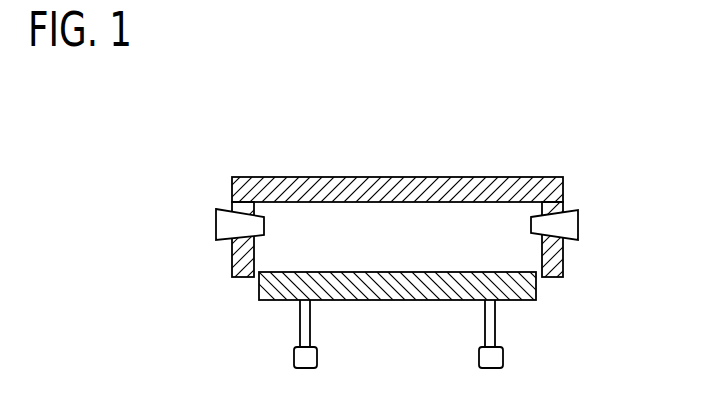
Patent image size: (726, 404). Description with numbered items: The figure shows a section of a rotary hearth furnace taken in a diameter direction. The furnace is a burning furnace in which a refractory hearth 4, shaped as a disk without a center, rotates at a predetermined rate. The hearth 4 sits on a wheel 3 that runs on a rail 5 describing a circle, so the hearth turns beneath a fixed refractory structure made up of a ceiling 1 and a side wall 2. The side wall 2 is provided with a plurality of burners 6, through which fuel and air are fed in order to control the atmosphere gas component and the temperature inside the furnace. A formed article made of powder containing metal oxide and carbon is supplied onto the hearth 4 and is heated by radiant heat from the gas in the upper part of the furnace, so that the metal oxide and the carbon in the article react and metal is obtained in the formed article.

The ceiling 1 is at (461, 182).
The side wall 2 is at (556, 209).
The wheel 3 is at (299, 318).
The refractory hearth 4 is at (437, 296).
The rail 5 is at (300, 355).
The burner 6 is at (569, 227).